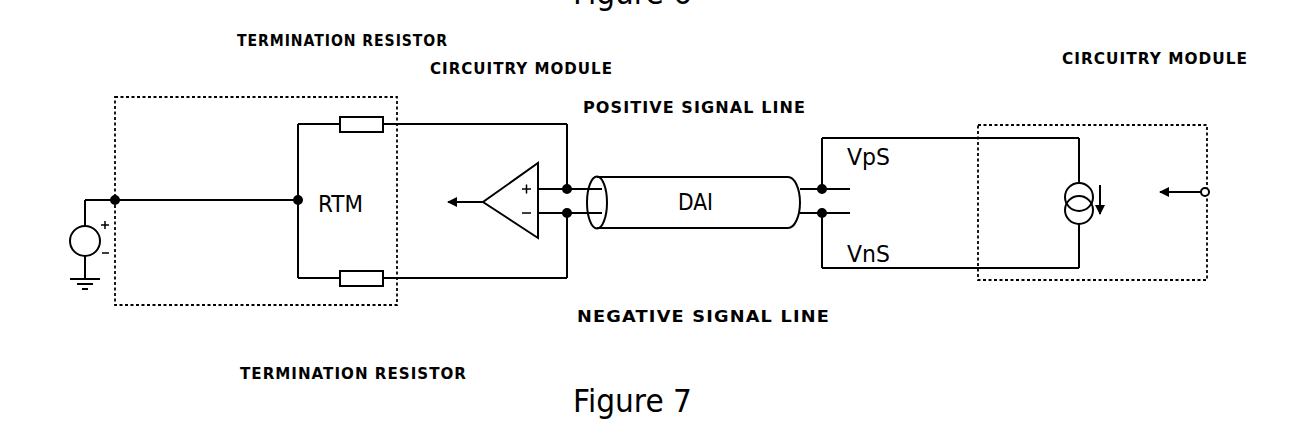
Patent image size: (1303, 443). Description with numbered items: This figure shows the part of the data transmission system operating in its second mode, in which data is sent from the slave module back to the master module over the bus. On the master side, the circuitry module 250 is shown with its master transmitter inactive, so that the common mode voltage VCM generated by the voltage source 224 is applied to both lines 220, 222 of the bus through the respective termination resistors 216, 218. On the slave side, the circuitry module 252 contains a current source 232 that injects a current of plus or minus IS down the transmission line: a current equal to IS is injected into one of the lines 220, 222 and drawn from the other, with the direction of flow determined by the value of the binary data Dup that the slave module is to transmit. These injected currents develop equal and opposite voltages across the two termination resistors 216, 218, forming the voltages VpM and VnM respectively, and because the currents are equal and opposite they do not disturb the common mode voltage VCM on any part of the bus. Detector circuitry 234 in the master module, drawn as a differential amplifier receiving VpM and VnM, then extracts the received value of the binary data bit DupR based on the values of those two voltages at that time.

The termination resistor 216 is at (345, 117).
The termination resistor 218 is at (352, 287).
The line 220 is at (573, 187).
The line 222 is at (573, 216).
The voltage source 224 is at (71, 248).
The current source 232 is at (1065, 211).
The detector circuitry 234 is at (513, 227).
The circuitry module 250 is at (400, 112).
The circuitry module 252 is at (1113, 125).